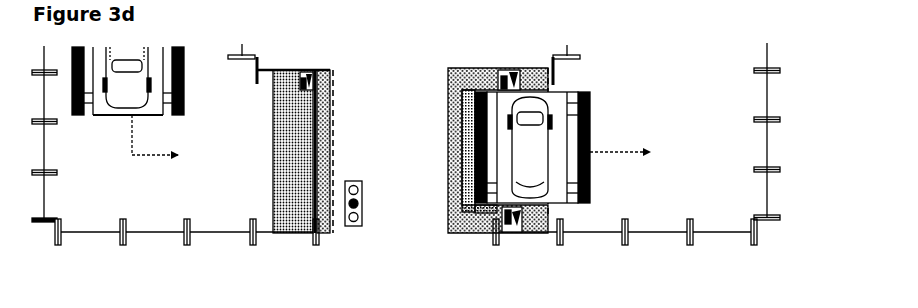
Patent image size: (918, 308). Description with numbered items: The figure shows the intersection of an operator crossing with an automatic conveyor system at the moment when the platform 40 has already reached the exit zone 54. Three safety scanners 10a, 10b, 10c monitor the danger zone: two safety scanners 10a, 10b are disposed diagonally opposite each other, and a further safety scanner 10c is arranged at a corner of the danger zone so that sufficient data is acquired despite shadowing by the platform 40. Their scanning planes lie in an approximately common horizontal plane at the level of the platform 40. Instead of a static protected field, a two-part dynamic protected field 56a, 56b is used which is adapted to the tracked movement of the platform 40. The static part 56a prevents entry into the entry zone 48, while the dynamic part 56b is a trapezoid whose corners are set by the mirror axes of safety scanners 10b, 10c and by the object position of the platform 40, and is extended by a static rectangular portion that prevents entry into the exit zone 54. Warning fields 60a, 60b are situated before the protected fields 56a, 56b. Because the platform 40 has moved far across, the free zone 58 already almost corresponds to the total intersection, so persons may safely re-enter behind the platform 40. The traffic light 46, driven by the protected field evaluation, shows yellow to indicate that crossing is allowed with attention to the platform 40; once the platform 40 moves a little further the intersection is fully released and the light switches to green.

The platform 40 is at (99, 118).
The safety scanner 10a is at (305, 63).
The safety scanner 10b is at (513, 236).
The safety scanner 10c is at (506, 66).
The static part of the protected field 56a is at (294, 126).
The dynamic part of the protected field 56b is at (498, 88).
The entry zone 48 is at (287, 234).
The warning field 60a is at (332, 238).
The warning field 60b is at (487, 233).
The traffic light 46 is at (356, 227).
The free zone 58 is at (403, 190).
The exit zone 54 is at (548, 214).